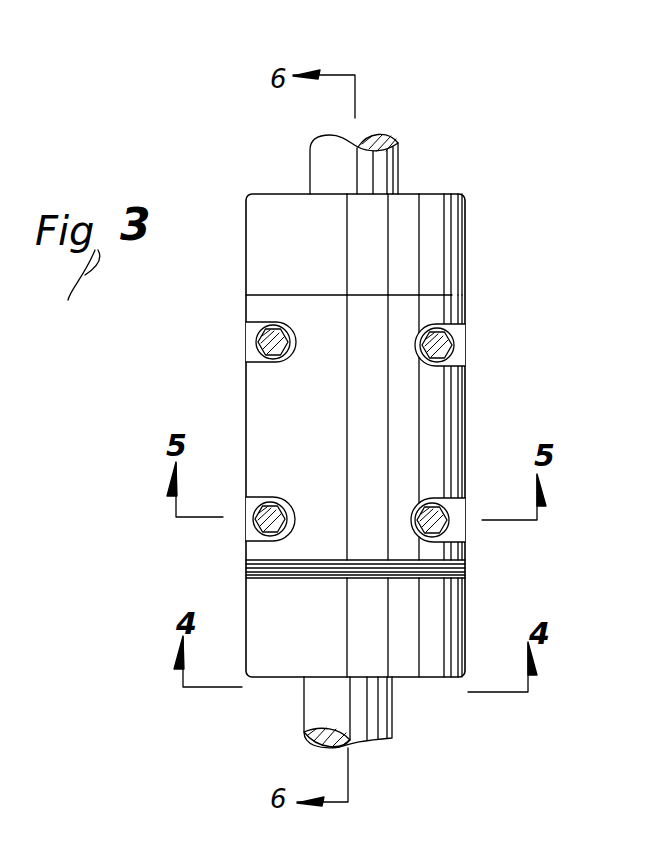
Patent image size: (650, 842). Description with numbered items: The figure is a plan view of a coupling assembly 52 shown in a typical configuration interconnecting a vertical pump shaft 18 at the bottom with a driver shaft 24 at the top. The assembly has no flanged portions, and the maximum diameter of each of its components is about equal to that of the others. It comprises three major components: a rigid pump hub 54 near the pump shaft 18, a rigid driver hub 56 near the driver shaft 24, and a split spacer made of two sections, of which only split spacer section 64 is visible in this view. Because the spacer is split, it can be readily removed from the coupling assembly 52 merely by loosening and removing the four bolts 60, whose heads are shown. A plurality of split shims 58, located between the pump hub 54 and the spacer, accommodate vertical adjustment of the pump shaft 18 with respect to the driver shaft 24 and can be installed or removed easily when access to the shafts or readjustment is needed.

The coupling assembly 52 is at (228, 182).
The driver shaft 24 is at (393, 176).
The pump shaft 18 is at (393, 700).
The rigid driver hub 56 is at (465, 250).
The split spacer section 64 is at (465, 410).
The shims 58 is at (463, 558).
The rigid pump hub 54 is at (462, 630).
The bolts 60 is at (292, 348).